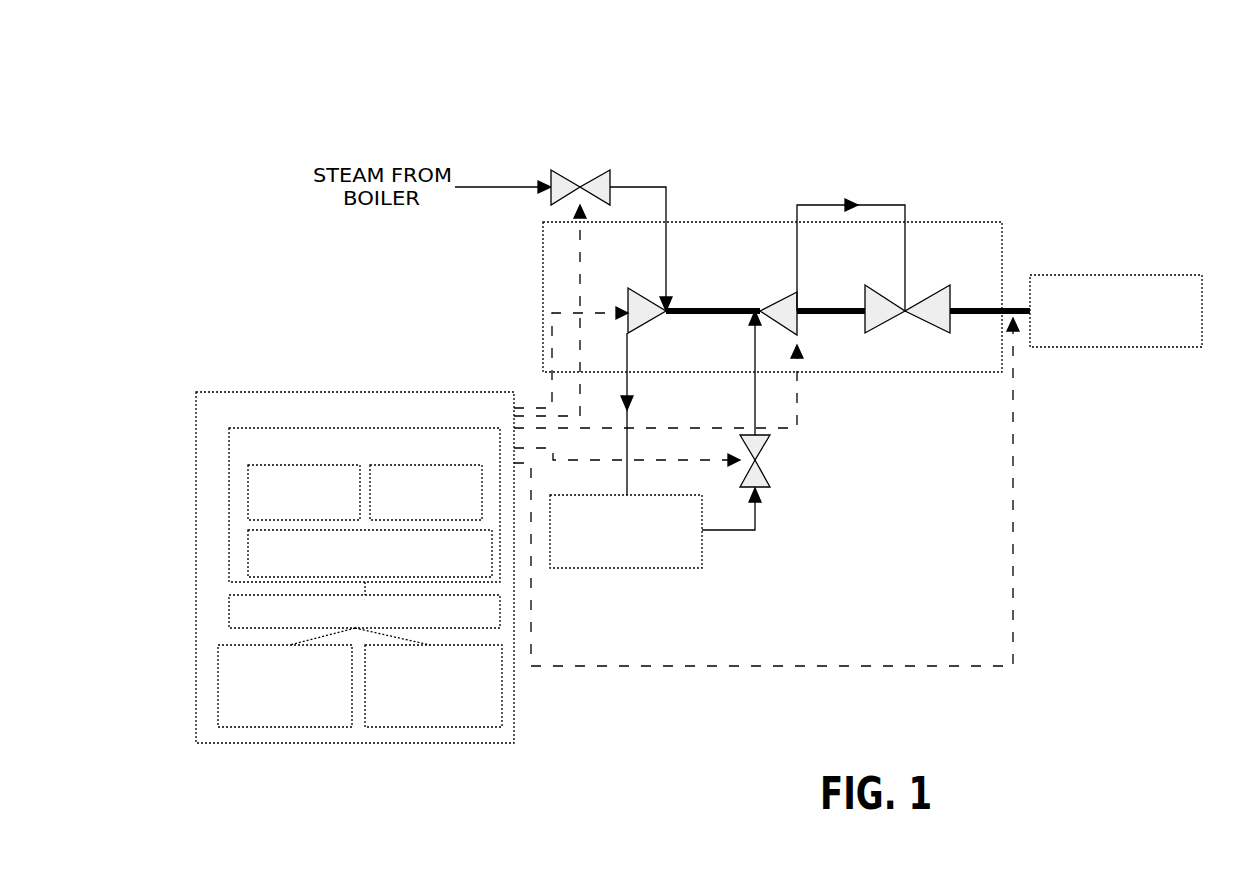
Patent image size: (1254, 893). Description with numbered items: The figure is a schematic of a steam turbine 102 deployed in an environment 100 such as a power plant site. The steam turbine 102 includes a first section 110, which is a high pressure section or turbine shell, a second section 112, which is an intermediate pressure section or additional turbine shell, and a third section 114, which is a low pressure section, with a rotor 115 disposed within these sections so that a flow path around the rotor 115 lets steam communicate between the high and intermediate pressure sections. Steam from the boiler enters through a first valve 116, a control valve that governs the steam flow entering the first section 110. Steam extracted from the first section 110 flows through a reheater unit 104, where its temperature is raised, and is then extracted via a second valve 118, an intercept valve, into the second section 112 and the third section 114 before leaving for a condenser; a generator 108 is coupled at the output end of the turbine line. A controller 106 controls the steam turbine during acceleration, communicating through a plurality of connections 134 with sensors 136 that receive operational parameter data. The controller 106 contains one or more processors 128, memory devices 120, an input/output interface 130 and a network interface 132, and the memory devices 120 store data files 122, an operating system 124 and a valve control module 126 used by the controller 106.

The environment 100 is at (1154, 36).
The steam turbine 102 is at (772, 260).
The reheater unit 104 is at (655, 477).
The controller 106 is at (355, 567).
The generator 108 is at (1116, 335).
The first section 110 is at (688, 297).
The second section 112 is at (832, 267).
The third section 114 is at (947, 297).
The rotor 115 is at (706, 278).
The first valve 116 is at (611, 233).
The second valve 118 is at (771, 399).
The memory devices 120 is at (364, 505).
The data files 122 is at (304, 492).
The operating system 124 is at (426, 492).
The valve control module 126 is at (370, 553).
The processor 128 is at (364, 605).
The input/output interface 130 is at (286, 677).
The network interface 132 is at (428, 677).
The connections 134 is at (754, 435).
The sensors 136 is at (819, 329).